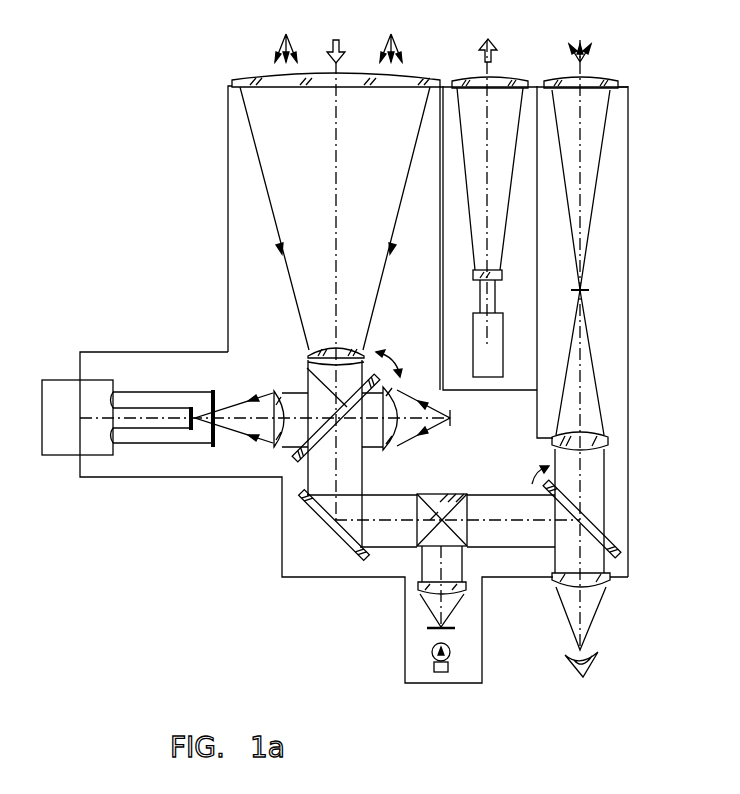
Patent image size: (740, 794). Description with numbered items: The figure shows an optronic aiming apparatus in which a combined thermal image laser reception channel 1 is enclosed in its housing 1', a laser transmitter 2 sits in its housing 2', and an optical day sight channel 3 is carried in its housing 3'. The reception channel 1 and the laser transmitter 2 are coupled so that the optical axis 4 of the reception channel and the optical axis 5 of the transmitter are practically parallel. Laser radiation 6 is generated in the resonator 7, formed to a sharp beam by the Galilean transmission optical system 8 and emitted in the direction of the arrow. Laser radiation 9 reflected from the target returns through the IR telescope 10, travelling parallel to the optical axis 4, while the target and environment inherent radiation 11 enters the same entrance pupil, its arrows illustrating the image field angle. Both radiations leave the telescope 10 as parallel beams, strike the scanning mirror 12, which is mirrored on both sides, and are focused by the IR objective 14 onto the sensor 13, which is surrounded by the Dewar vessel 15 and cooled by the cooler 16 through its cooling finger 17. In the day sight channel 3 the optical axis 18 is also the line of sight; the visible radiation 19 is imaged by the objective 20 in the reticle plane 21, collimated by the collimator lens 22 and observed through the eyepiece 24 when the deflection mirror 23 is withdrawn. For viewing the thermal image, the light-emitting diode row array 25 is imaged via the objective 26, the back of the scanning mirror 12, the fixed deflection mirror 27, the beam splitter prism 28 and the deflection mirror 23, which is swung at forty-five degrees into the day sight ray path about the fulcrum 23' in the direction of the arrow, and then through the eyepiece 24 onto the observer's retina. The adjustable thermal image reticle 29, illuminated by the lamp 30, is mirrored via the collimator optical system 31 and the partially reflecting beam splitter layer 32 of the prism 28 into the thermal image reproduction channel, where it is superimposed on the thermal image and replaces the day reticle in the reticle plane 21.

The thermal image laser reception channel 1 is at (354, 384).
The housing of the thermal image laser reception channel 1' is at (315, 218).
The laser transmitter 2 is at (534, 262).
The housing of the laser transmitter 2' is at (509, 179).
The optical day sight channel 3 is at (640, 331).
The housing of the day sight channel 3' is at (603, 262).
The optical axis of the reception channel 4 is at (338, 115).
The optical axis of the laser transmitter 5 is at (490, 90).
The laser radiation 6 is at (488, 39).
The resonator 7 is at (503, 350).
The beam expander element 8 is at (500, 272).
The incident laser radiation 9 is at (336, 40).
The IR telescope 10 is at (292, 82).
The target and environment inherent radiation 11 is at (286, 34).
The scanning mirror 12 is at (308, 368).
The sensor 13 is at (192, 430).
The IR objective 14 is at (272, 452).
The Dewar vessel 15 is at (122, 440).
The cooler 16 is at (50, 448).
The cooling finger 17 is at (147, 420).
The optical axis of the day sight channel 18 is at (580, 100).
The visible radiation 19 is at (580, 32).
The objective 20 is at (618, 84).
The reticle plane 21 is at (590, 290).
The collimator lens 22 is at (608, 440).
The deflection mirror 23 is at (603, 519).
The fulcrum 23' is at (601, 525).
The eyepiece 24 is at (606, 585).
The light-emitting diode row array 25 is at (450, 428).
The objective 26 is at (388, 450).
The fixed deflection mirror 27 is at (320, 510).
The beam splitter prism 28 is at (420, 532).
The thermal image reticle 29 is at (457, 629).
The lamp 30 is at (443, 672).
The collimator optical system 31 is at (466, 590).
The partially reflecting beam splitter layer 32 is at (440, 533).